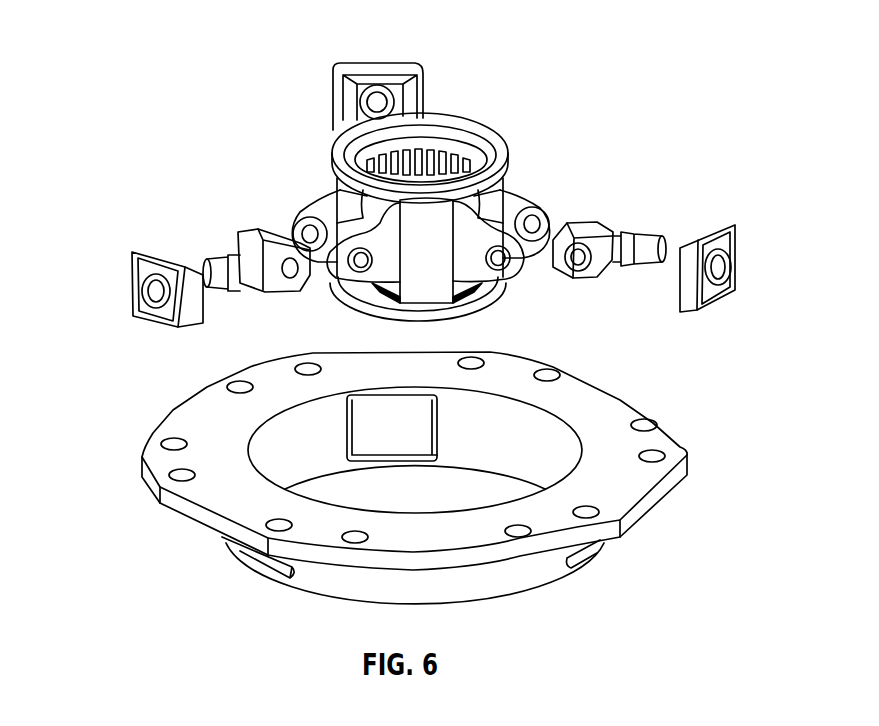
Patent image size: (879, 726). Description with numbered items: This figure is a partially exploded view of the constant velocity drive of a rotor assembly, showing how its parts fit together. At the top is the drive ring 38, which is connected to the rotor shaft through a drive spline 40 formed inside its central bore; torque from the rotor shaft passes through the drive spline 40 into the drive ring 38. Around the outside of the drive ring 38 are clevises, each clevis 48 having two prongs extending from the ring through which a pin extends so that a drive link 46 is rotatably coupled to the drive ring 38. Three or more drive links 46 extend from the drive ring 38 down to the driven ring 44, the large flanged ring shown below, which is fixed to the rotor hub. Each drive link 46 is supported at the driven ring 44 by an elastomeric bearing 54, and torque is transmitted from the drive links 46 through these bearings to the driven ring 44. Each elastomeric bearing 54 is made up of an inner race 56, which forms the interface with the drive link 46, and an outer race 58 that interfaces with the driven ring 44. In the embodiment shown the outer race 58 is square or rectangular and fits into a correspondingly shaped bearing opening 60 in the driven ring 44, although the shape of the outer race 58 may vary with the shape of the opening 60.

The drive ring 38 is at (337, 149).
The drive spline 40 is at (457, 152).
The driven ring 44 is at (414, 474).
The drive link 46 is at (257, 236).
The clevis 48 is at (316, 208).
The elastomeric bearing 54 is at (424, 177).
The inner race 56 is at (377, 94).
The outer race 58 is at (403, 70).
The bearing opening 60 is at (372, 437).